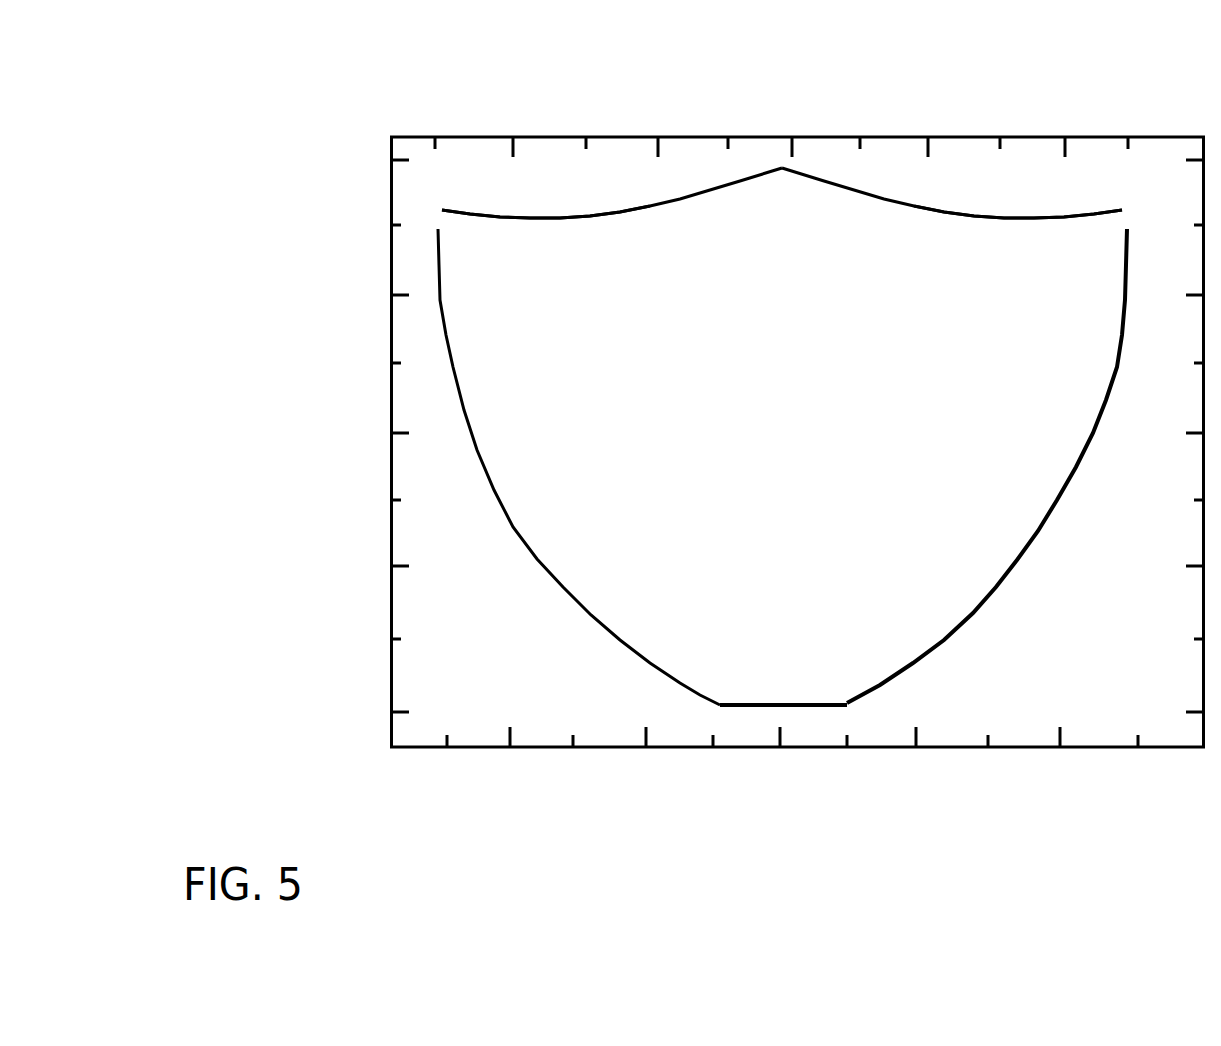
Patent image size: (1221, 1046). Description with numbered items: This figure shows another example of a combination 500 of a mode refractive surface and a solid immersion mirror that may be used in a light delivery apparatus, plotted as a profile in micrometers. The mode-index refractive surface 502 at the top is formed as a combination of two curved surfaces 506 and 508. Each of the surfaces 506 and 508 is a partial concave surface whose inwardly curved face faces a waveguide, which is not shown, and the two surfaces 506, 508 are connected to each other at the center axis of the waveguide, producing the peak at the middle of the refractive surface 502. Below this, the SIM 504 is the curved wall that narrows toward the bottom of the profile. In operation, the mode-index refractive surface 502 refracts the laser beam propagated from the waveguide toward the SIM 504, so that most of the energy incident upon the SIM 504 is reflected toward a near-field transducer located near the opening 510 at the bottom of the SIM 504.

The combination of a mode refractive surface and SIM 500 is at (272, 112).
The mode-index refractive surface 502 is at (788, 152).
The SIM 504 is at (986, 629).
The curved surface 506 is at (628, 210).
The curved surface 508 is at (1018, 215).
The opening 510 is at (747, 703).